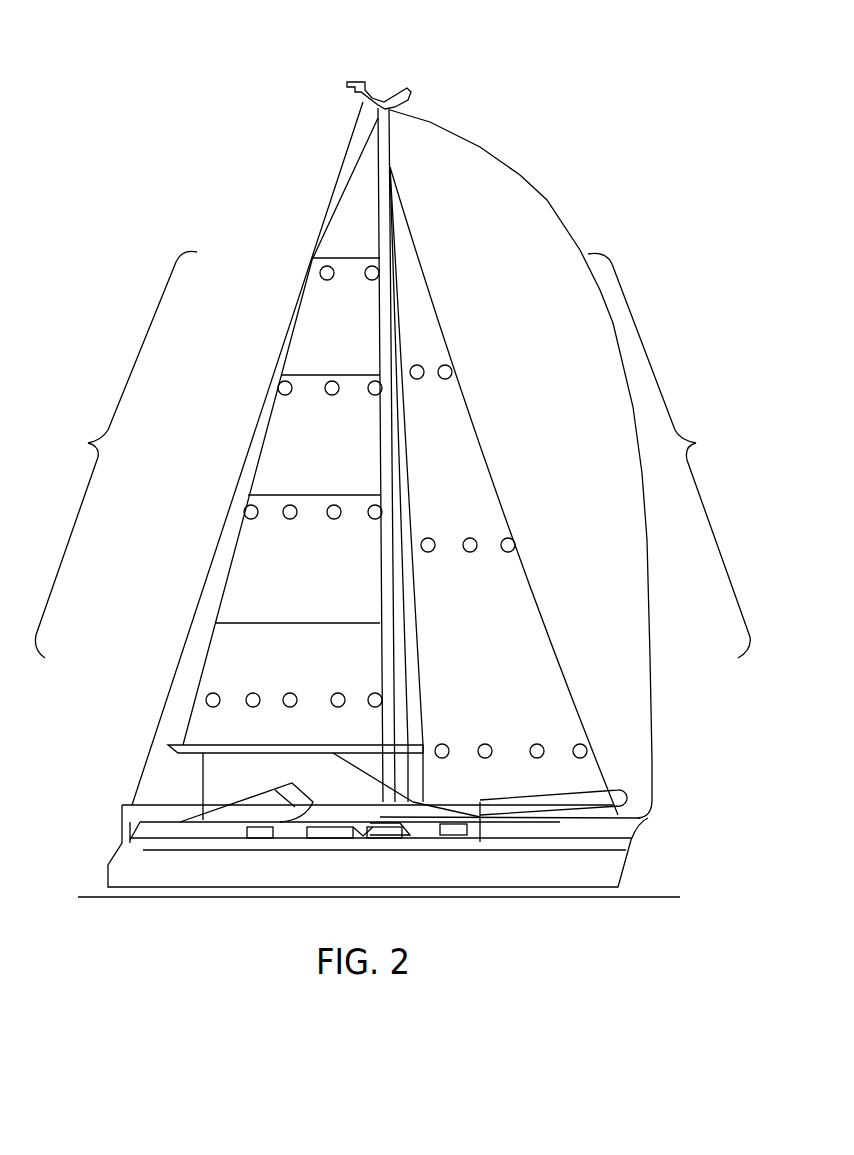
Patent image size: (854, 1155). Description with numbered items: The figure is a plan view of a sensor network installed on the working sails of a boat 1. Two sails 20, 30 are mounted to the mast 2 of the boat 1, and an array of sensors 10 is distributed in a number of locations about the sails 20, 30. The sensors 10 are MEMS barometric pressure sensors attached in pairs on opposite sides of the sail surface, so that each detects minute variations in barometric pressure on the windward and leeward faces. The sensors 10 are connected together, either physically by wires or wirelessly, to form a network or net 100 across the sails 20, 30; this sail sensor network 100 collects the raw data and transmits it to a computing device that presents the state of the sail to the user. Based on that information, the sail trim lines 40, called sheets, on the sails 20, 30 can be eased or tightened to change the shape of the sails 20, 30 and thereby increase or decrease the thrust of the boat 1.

The boat 1 is at (606, 864).
The mast 2 is at (370, 74).
The sensors 10 is at (280, 382).
The sail 20 is at (260, 558).
The sail 30 is at (482, 598).
The sail trim lines 40 is at (166, 778).
The sail sensor network 100 is at (392, 454).